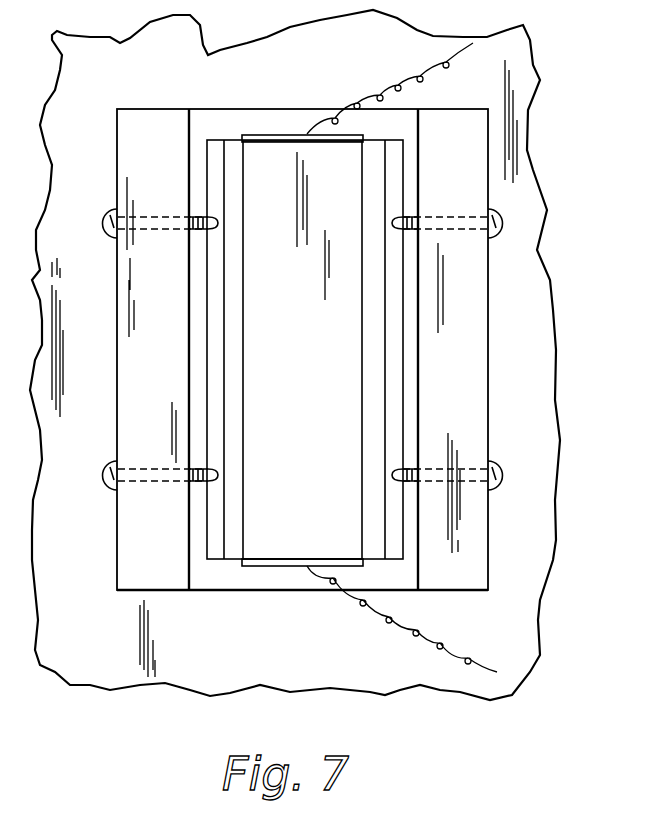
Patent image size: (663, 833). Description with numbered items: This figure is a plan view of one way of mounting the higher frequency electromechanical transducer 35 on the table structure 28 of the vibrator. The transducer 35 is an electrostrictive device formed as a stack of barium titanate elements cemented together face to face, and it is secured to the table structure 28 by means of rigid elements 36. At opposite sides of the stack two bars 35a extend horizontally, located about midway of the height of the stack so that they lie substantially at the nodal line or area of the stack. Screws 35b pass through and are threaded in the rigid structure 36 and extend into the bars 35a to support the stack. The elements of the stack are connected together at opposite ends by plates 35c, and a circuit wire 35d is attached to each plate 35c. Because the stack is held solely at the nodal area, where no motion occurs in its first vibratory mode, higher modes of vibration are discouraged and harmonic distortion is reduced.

The table structure 28 is at (545, 377).
The rigid elements 36 is at (468, 322).
The higher frequency electromechanical transducer 35 is at (308, 330).
The bars 35a is at (398, 377).
The screws 35b is at (107, 217).
The plates 35c is at (273, 135).
The circuit wire 35d is at (455, 45).